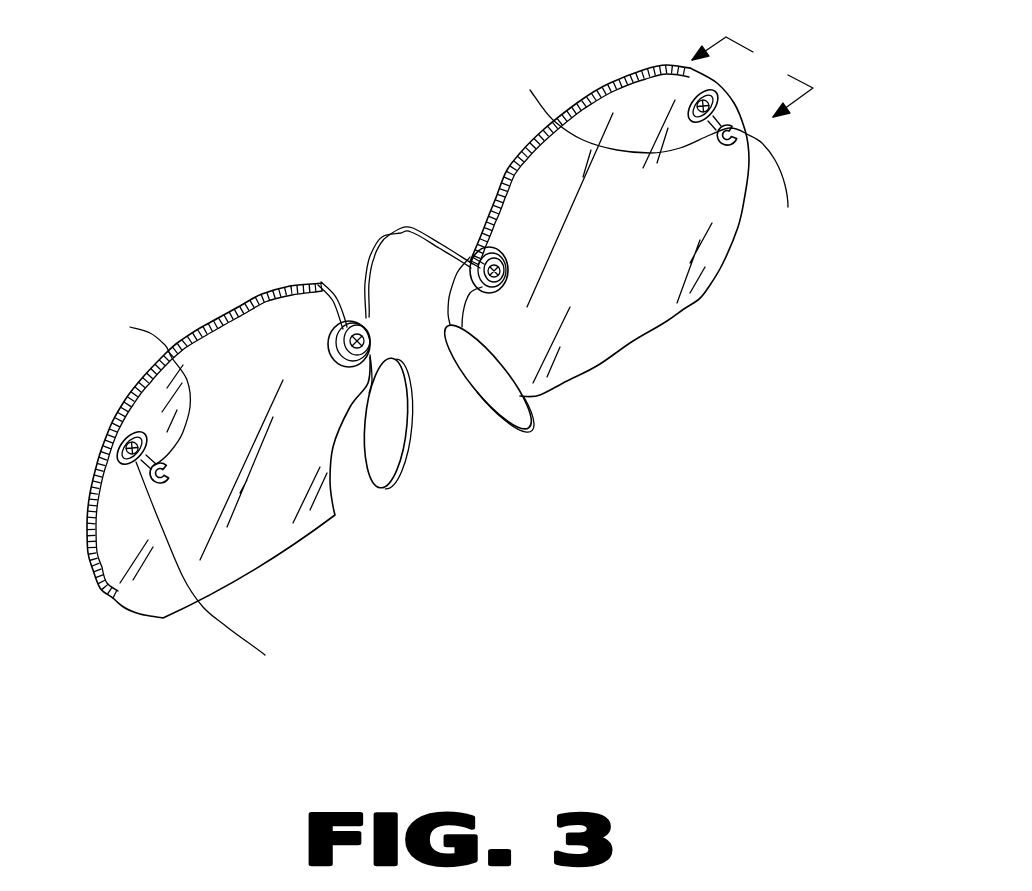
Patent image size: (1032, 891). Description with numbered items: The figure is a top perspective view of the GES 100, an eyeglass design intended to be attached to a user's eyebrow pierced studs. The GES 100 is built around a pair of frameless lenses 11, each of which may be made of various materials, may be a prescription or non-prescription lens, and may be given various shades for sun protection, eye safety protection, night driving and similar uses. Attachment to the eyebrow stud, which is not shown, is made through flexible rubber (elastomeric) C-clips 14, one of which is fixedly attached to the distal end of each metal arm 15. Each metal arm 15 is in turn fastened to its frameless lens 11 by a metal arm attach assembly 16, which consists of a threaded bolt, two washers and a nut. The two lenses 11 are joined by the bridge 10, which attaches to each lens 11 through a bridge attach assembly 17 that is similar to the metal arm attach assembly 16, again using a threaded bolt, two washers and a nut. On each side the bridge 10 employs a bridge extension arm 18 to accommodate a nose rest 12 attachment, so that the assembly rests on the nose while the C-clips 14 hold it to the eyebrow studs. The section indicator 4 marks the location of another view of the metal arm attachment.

The GES 100 is at (237, 233).
The section line for FIG. 4 is at (752, 77).
The bridge 10 is at (400, 229).
The frameless lens 11 is at (265, 548).
The nose rest 12 is at (406, 443).
The C-clip 14 is at (449, 304).
The metal arm 15 is at (150, 442).
The metal arm attach assembly 16 is at (688, 103).
The bridge attach assembly 17 is at (328, 292).
The bridge extension arm 18 is at (335, 515).